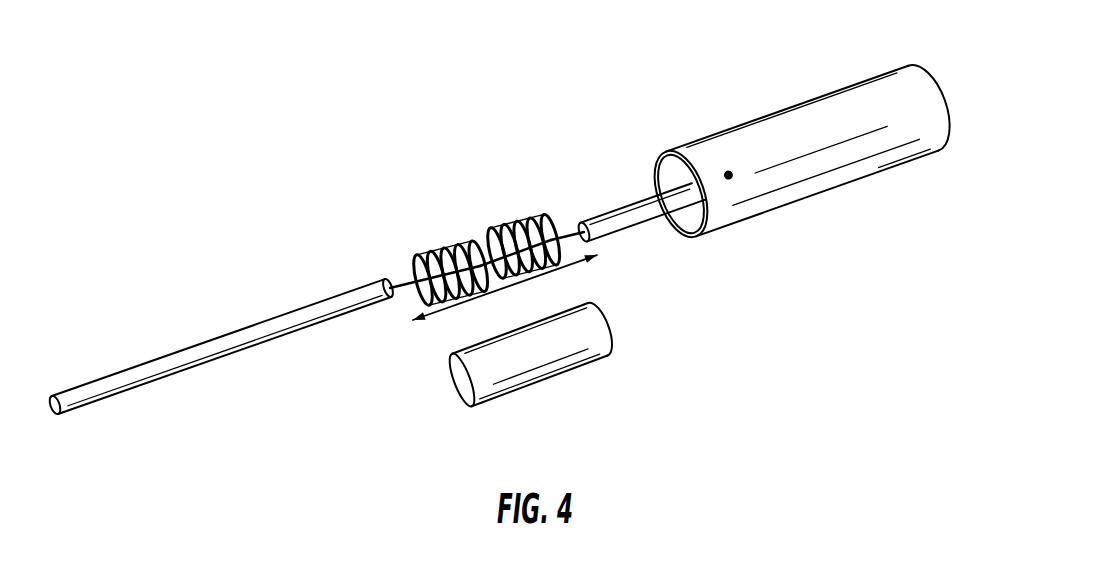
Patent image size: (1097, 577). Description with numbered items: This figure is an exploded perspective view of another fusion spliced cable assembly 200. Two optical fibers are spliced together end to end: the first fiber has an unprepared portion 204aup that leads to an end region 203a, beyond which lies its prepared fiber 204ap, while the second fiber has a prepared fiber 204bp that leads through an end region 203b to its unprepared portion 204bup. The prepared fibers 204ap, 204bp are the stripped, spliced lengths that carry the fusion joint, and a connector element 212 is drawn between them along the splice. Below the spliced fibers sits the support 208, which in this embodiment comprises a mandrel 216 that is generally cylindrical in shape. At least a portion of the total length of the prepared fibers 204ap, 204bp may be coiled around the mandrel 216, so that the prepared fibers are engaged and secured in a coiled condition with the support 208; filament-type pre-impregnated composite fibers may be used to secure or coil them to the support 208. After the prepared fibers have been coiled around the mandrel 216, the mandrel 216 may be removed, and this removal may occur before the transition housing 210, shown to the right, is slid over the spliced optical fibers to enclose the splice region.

The fusion spliced cable assembly 200 is at (227, 107).
The unprepared portion of optical fiber 204a 204aup is at (250, 313).
The end of optical fiber 204a 203a is at (388, 278).
The prepared fiber 204ap is at (424, 241).
The coil connector 212 is at (497, 238).
The prepared fiber 204bp is at (556, 223).
The end of optical fiber 204b 203b is at (583, 224).
The unprepared portion of optical fiber 204b 204bup is at (644, 205).
The transition housing 210 is at (730, 140).
The support 208 is at (452, 378).
The mandrel 216 is at (558, 353).